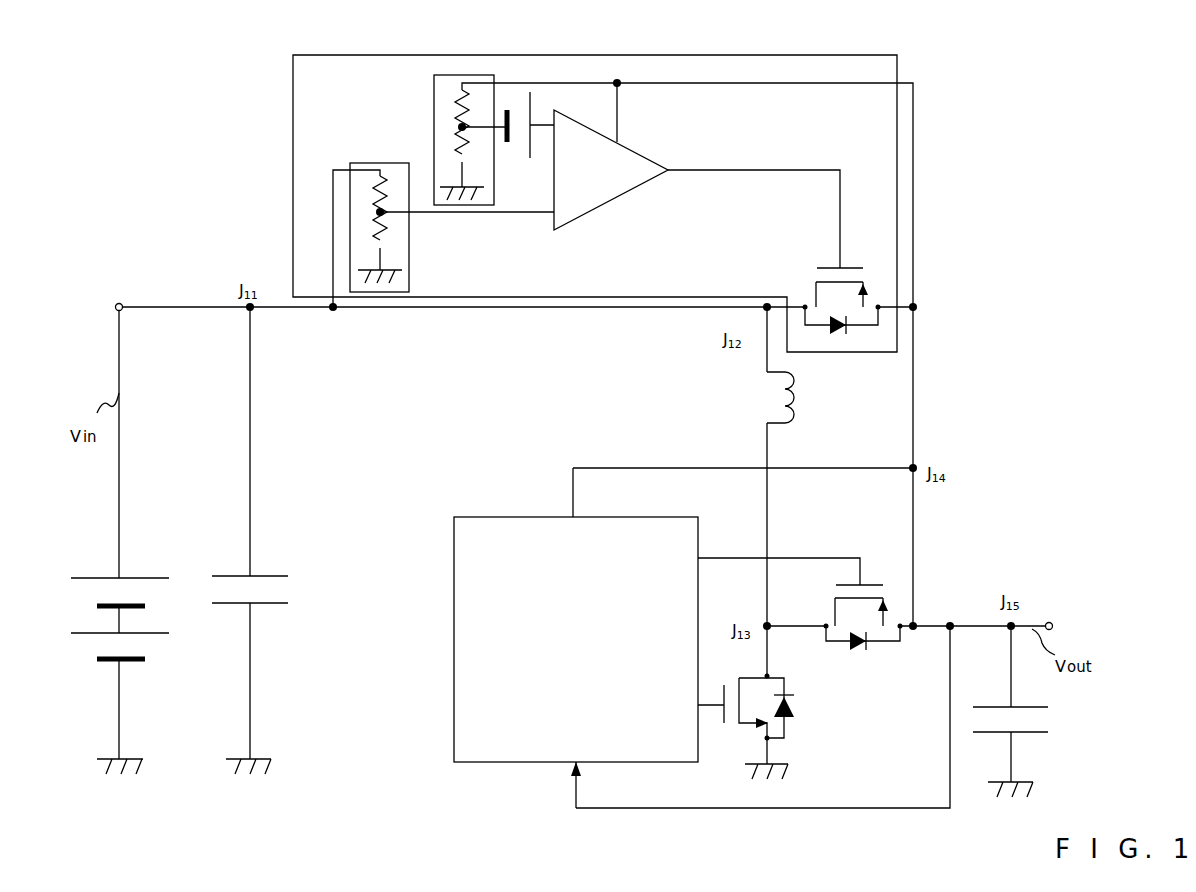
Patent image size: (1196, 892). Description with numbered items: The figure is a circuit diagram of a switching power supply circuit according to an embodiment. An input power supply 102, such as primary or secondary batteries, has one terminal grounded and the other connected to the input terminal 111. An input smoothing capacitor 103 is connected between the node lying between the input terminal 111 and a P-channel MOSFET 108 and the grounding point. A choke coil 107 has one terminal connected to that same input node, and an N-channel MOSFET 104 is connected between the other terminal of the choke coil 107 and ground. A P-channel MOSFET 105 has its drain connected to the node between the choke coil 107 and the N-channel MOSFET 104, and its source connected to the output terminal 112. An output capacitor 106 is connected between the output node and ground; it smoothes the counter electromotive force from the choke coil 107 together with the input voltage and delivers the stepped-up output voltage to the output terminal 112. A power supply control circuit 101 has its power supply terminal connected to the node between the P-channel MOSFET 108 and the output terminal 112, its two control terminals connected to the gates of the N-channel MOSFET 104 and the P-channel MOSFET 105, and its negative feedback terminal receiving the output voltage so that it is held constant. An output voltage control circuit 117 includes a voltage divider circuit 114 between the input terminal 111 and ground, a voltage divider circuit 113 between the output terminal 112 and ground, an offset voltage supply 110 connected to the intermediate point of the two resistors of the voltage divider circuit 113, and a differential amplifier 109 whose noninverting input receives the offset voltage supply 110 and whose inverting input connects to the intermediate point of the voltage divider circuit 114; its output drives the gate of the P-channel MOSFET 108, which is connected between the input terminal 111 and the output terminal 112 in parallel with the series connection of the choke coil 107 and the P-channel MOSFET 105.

The power supply control circuit 101 is at (452, 730).
The input power supply 102 is at (160, 611).
The input smoothing capacitor 103 is at (264, 597).
The N-channel MOSFET 104 is at (786, 728).
The P-channel MOSFET 105 is at (887, 594).
The output capacitor 106 is at (1053, 717).
The choke coil 107 is at (808, 394).
The P-channel MOSFET 108 is at (810, 272).
The differential amplifier 109 is at (578, 218).
The offset voltage supply 110 is at (540, 97).
The input terminal 111 is at (122, 304).
The output terminal 112 is at (1053, 623).
The voltage divider circuit 113 is at (434, 118).
The voltage divider circuit 114 is at (373, 166).
The output voltage control circuit 117 is at (808, 54).